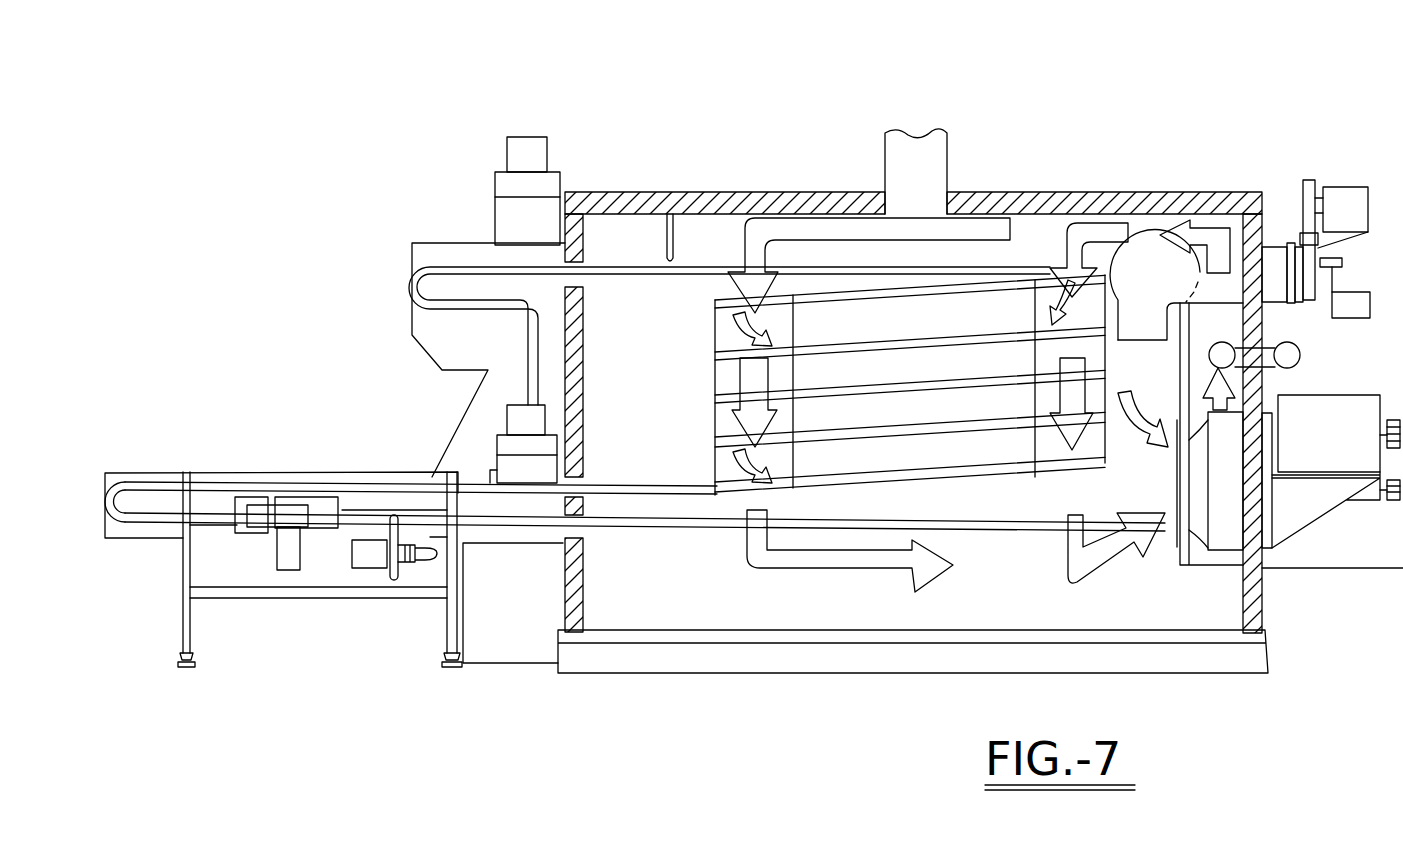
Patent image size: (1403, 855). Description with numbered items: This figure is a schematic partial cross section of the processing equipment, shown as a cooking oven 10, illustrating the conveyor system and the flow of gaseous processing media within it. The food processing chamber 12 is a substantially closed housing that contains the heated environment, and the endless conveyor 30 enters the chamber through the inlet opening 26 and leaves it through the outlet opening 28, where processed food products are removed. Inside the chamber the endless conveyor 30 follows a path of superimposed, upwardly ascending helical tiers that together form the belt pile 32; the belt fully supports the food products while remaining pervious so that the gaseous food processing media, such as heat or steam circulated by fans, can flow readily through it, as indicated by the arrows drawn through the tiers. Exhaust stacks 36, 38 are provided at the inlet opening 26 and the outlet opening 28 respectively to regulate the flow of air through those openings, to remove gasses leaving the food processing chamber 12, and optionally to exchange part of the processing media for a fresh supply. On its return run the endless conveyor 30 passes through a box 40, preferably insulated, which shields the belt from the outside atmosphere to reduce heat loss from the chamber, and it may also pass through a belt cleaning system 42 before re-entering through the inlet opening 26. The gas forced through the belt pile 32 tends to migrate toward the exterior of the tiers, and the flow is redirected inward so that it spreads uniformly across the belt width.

The cooking oven 10 is at (686, 138).
The food processing chamber 12 is at (715, 606).
The inlet opening 26 is at (586, 481).
The outlet opening 28 is at (586, 279).
The endless conveyor 30 is at (258, 478).
The belt pile 32 is at (715, 385).
The exhaust stack 36 is at (505, 465).
The exhaust stack 38 is at (503, 232).
The box 40 is at (462, 412).
The belt cleaning system 42 is at (303, 600).